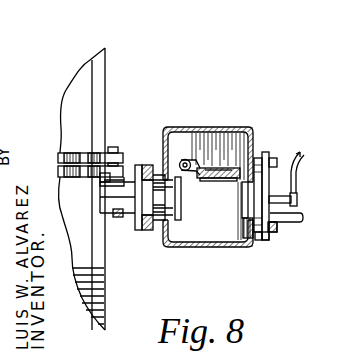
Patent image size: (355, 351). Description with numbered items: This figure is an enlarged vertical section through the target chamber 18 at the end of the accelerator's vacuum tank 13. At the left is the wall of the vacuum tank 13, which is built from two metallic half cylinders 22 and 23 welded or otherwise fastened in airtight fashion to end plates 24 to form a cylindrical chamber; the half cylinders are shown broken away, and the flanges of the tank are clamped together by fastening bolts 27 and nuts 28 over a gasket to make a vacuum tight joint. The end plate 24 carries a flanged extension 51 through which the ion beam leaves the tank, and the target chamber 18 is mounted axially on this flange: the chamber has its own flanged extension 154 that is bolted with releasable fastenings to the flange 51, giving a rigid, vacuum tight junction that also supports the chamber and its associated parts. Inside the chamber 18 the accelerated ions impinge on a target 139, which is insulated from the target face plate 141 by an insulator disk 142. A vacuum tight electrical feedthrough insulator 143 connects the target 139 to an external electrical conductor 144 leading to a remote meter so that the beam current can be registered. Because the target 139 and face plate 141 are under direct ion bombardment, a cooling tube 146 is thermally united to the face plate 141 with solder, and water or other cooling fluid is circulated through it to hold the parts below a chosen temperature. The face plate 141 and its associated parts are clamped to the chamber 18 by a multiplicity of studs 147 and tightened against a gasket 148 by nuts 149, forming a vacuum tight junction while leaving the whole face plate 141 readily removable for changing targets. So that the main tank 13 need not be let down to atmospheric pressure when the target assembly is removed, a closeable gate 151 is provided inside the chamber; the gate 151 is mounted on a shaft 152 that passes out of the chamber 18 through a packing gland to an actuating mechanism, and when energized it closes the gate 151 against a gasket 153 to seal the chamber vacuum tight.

The vacuum tank 13 is at (60, 95).
The half cylinder 22 is at (82, 70).
The end plate 24 is at (97, 85).
The half cylinder 23 is at (96, 297).
The fastening bolt 27 is at (105, 150).
The nut 28 is at (105, 186).
The flanged extension 51 is at (143, 166).
The flanged extension 154 is at (148, 231).
The target chamber 18 is at (170, 126).
The shaft 152 is at (186, 158).
The gasket 153 is at (236, 180).
The gate 151 is at (214, 165).
The target 139 is at (244, 198).
The gasket 148 is at (265, 178).
The electrical feedthrough insulator 143 is at (301, 151).
The external electrical conductor 144 is at (303, 162).
The cooling tube 146 is at (284, 222).
The stud 147 is at (276, 233).
The nut 149 is at (267, 241).
The target face plate 141 is at (263, 241).
The insulator disk 142 is at (250, 223).